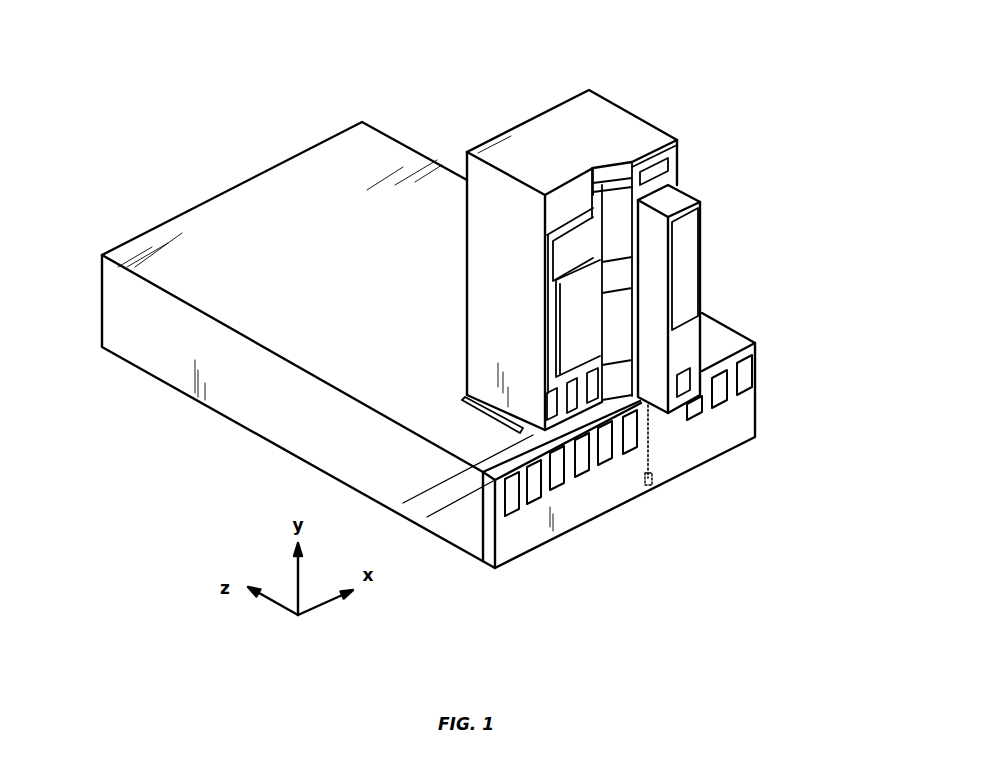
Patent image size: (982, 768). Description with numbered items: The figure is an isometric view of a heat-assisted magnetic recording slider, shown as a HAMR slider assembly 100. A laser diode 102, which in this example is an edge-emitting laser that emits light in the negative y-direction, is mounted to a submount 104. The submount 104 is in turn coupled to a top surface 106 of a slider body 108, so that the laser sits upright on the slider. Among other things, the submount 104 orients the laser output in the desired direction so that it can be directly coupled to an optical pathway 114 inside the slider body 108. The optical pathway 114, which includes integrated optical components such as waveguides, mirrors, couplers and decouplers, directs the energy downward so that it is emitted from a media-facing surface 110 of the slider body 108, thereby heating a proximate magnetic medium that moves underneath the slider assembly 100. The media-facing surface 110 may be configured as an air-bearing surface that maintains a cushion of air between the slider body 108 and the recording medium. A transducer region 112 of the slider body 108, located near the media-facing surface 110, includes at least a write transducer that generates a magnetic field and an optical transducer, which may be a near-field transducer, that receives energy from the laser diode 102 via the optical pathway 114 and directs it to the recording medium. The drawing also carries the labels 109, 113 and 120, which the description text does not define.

The HAMR slider assembly 100 is at (810, 60).
The laser diode 102 is at (677, 200).
The submount 104 is at (638, 133).
The top surface 106 is at (270, 220).
The slider body 108 is at (123, 330).
The offset distance 109 is at (477, 525).
The media-facing surface 110 is at (477, 560).
The transducer region 112 is at (646, 484).
The connector panel 113 is at (687, 268).
The optical pathway 114 is at (651, 440).
The port openings 120 is at (743, 388).